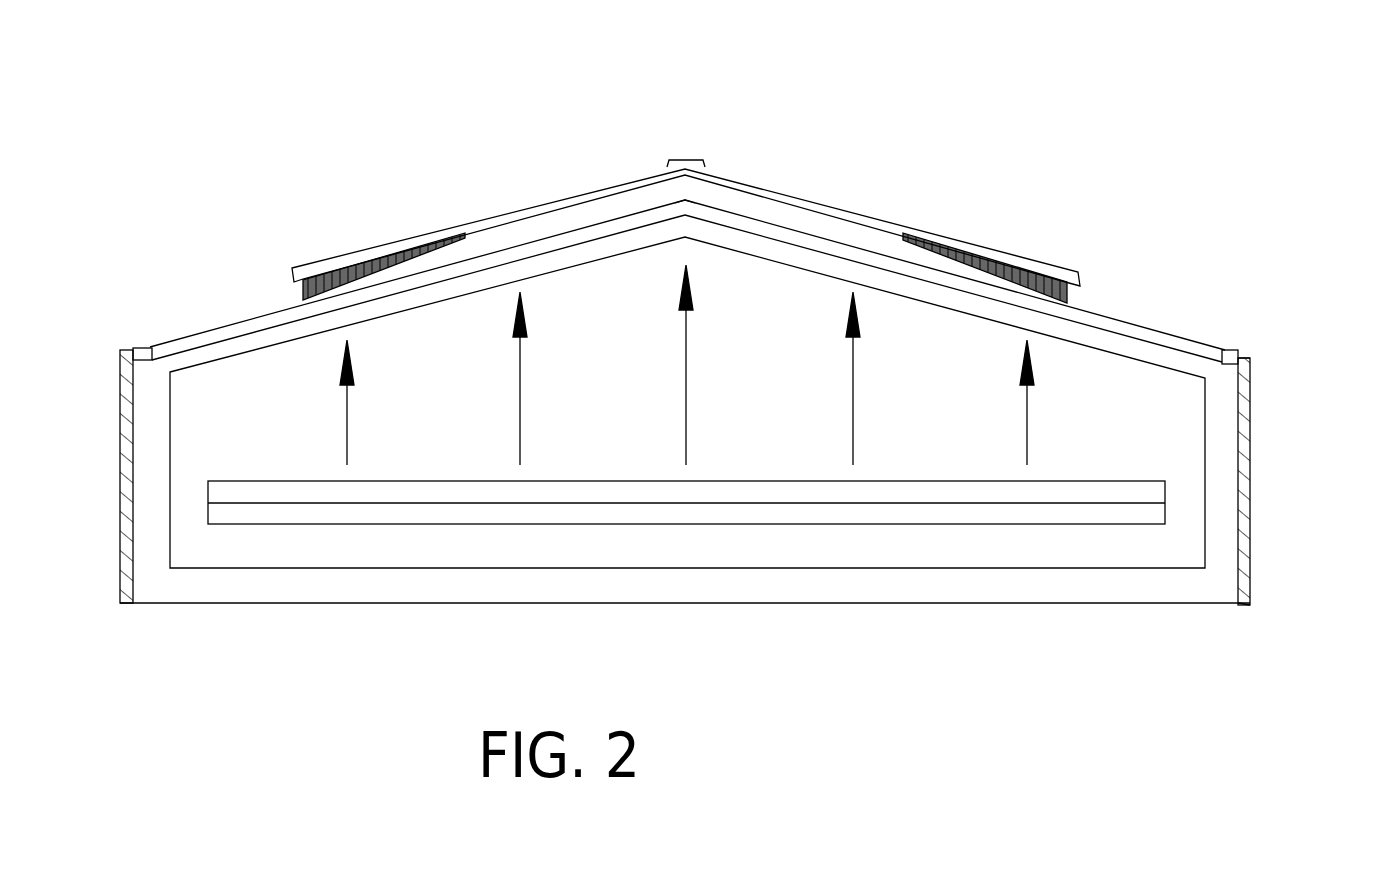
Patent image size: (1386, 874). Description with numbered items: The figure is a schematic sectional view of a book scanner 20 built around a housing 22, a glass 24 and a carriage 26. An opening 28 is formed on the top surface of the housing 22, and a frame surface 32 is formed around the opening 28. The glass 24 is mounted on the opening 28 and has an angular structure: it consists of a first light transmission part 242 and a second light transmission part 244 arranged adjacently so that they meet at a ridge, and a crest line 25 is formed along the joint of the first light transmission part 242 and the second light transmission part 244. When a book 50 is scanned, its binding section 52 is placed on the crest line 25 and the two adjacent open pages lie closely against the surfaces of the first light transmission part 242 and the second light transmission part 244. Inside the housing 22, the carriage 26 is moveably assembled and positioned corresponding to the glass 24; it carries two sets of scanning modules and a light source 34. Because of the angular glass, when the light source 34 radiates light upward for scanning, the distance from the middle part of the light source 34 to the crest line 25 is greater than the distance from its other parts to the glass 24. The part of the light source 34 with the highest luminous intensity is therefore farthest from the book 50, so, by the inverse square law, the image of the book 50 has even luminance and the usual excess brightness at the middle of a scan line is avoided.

The book scanner 20 is at (700, 319).
The housing 22 is at (1245, 547).
The glass 24 is at (696, 256).
The first light transmission part 242 is at (1152, 337).
The second light transmission part 244 is at (230, 333).
The crest line 25 is at (690, 213).
The carriage 26 is at (1210, 557).
The opening 28 is at (1227, 353).
The frame surface 32 is at (140, 355).
The light source 34 is at (233, 493).
The book 50 is at (817, 203).
The binding section 52 is at (677, 162).